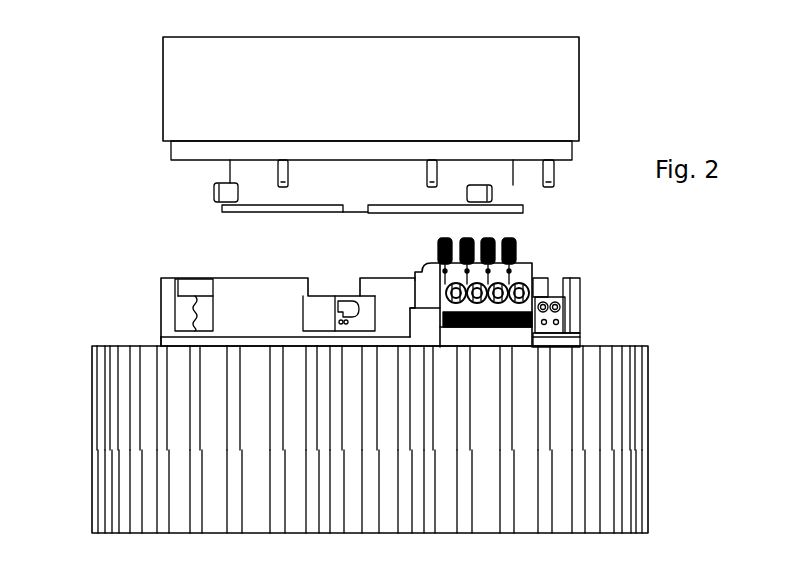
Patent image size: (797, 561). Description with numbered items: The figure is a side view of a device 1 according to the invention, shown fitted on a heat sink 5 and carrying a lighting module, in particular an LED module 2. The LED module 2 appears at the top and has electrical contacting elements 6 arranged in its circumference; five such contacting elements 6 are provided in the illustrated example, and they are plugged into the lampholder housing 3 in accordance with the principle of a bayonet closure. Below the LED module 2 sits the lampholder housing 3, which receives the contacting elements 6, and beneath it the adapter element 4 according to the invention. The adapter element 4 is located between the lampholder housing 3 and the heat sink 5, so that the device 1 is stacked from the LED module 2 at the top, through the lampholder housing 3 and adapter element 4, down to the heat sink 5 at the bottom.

The device 1 is at (606, 301).
The LED module 2 is at (205, 88).
The lampholder housing 3 is at (263, 296).
The adapter element 4 is at (172, 340).
The heat sink 5 is at (625, 456).
The electrical contacting elements 6 is at (282, 178).